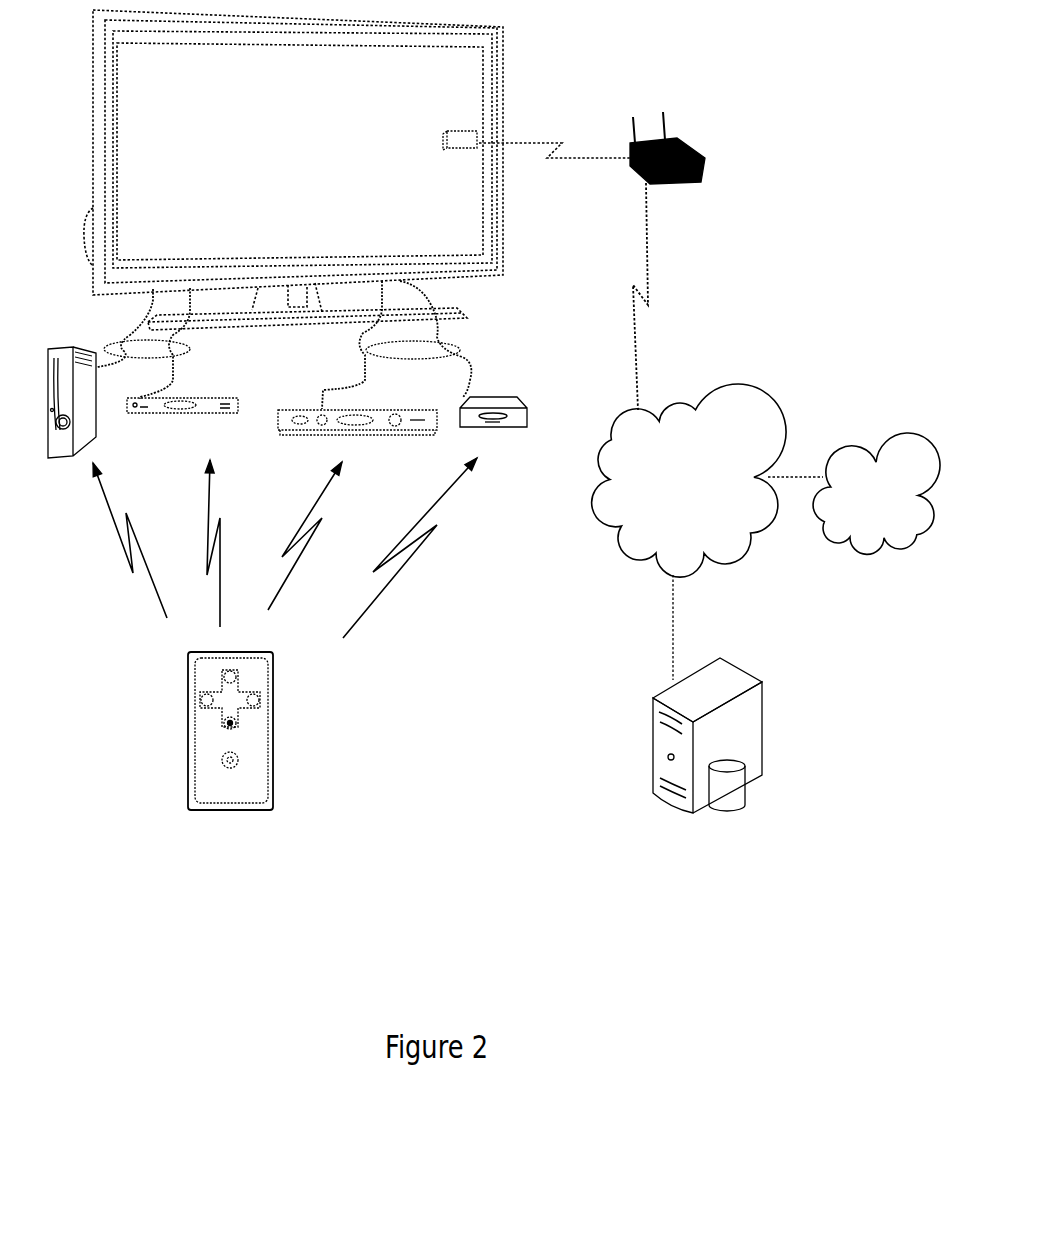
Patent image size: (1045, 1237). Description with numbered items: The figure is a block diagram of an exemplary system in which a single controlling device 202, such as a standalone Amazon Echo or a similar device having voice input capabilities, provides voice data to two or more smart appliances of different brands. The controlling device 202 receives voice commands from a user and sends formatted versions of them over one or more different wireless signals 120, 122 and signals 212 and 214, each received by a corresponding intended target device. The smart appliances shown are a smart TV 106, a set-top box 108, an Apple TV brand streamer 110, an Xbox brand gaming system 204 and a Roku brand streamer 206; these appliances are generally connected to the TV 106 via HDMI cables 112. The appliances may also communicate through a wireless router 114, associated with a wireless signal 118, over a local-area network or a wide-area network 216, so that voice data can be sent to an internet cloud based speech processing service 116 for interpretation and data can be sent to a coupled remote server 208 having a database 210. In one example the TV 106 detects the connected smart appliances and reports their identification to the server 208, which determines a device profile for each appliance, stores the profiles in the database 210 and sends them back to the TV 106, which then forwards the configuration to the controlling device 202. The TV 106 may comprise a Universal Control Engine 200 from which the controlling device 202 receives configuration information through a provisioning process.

The smart TV 106 is at (493, 283).
The set-top box 108 is at (425, 437).
The Apple TV brand streamer 110 is at (503, 430).
The HDMI cable 112 is at (364, 350).
The wireless router 114 is at (677, 185).
The speech processing service 116 is at (875, 560).
The wireless signal 118 is at (647, 243).
The wireless signal 120 is at (280, 593).
The wireless signal 122 is at (367, 613).
The Universal Control Engine 200 is at (460, 130).
The controlling device 202 is at (273, 778).
The Xbox brand gaming system 204 is at (67, 458).
The Roku brand streamer 206 is at (177, 420).
The remote server 208 is at (695, 668).
The database 210 is at (735, 812).
The wireless signal 212 is at (122, 553).
The wireless signal 214 is at (220, 605).
The wide-area network 216 is at (716, 562).